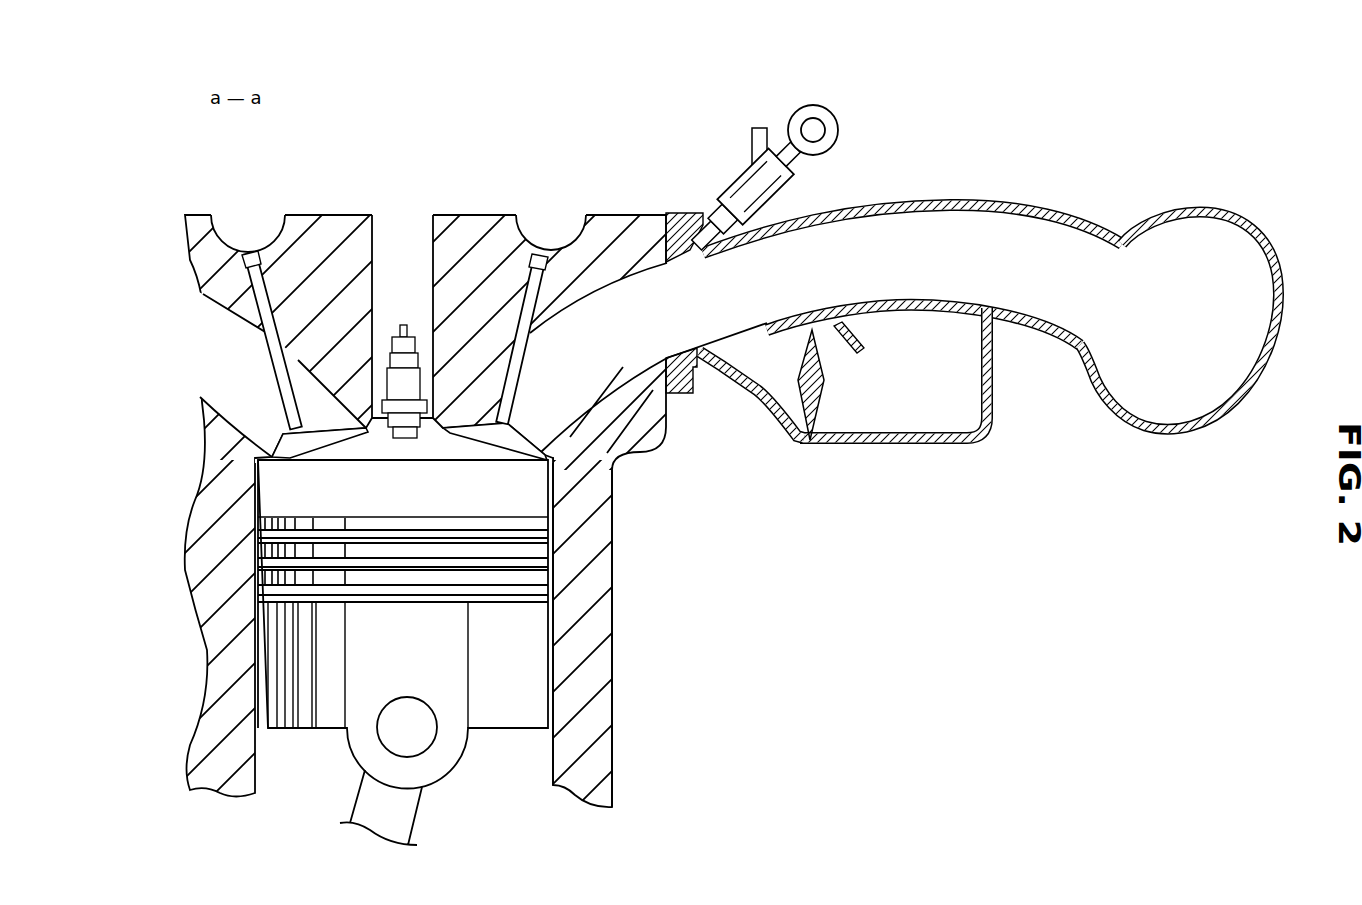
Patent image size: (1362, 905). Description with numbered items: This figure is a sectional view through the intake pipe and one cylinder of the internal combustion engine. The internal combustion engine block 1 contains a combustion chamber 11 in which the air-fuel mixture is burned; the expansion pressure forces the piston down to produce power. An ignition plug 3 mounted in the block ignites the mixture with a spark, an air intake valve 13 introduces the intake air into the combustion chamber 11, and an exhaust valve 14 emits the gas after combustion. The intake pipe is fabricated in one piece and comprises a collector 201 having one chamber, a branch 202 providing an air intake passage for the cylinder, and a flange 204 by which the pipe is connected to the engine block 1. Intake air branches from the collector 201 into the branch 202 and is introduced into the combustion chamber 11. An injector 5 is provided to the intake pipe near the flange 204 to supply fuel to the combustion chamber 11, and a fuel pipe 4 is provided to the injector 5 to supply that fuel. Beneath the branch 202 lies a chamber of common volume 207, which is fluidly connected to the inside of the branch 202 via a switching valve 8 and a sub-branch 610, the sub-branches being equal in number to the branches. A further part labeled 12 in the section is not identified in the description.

The internal combustion engine block 1 is at (345, 213).
The ignition plug 3 is at (410, 330).
The fuel pipe 4 is at (840, 108).
The injector 5 is at (743, 166).
The switching valve 8 is at (810, 443).
The combustion chamber 11 is at (485, 485).
The cylinder block 12 is at (550, 655).
The air intake valve 13 is at (555, 438).
The exhaust valve 14 is at (216, 416).
The collector 201 is at (1205, 209).
The branch 202 is at (951, 202).
The flange 204 is at (682, 213).
The common volume 207 is at (947, 444).
The sub-branches 610 is at (726, 374).